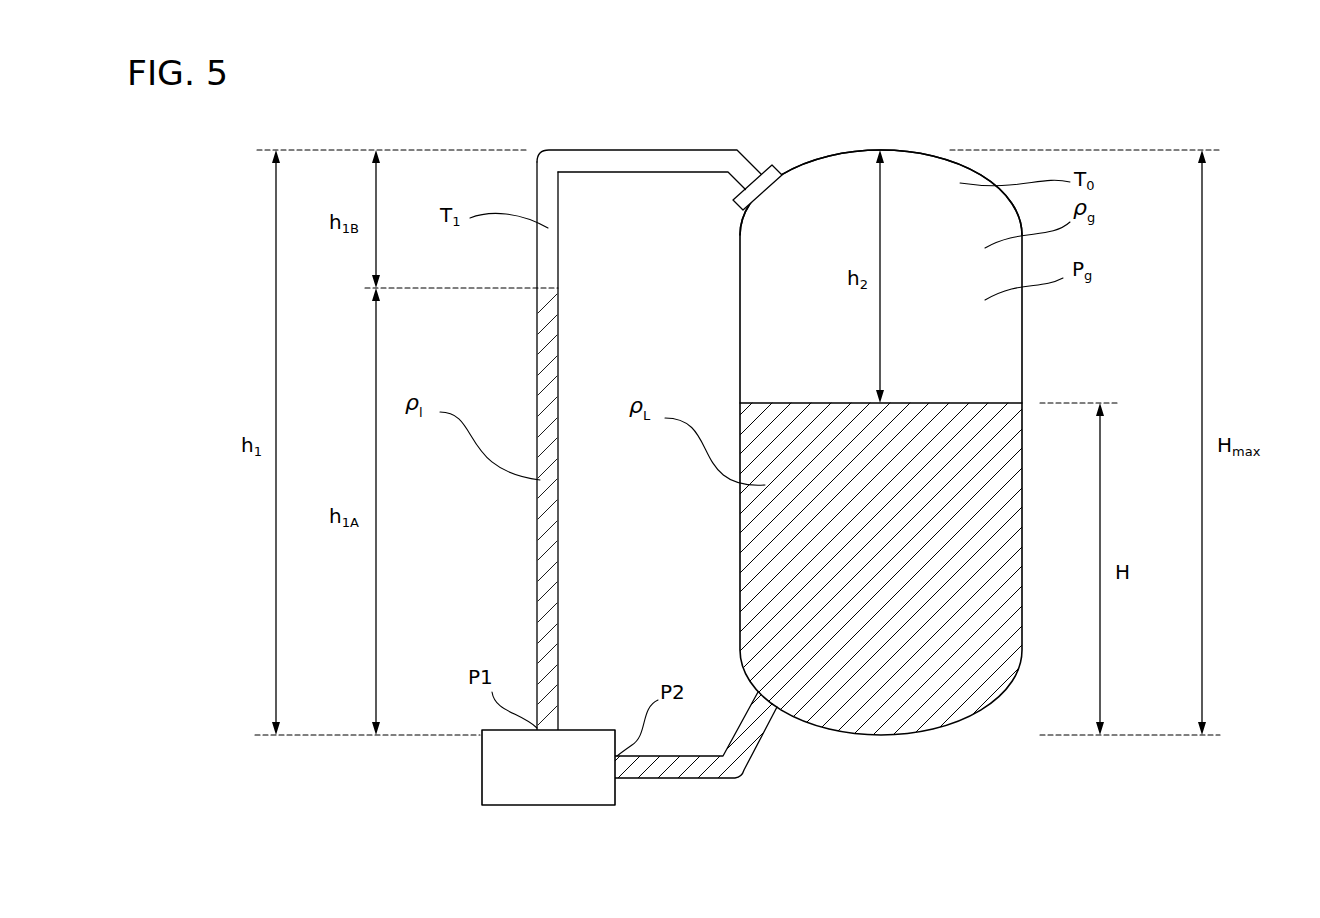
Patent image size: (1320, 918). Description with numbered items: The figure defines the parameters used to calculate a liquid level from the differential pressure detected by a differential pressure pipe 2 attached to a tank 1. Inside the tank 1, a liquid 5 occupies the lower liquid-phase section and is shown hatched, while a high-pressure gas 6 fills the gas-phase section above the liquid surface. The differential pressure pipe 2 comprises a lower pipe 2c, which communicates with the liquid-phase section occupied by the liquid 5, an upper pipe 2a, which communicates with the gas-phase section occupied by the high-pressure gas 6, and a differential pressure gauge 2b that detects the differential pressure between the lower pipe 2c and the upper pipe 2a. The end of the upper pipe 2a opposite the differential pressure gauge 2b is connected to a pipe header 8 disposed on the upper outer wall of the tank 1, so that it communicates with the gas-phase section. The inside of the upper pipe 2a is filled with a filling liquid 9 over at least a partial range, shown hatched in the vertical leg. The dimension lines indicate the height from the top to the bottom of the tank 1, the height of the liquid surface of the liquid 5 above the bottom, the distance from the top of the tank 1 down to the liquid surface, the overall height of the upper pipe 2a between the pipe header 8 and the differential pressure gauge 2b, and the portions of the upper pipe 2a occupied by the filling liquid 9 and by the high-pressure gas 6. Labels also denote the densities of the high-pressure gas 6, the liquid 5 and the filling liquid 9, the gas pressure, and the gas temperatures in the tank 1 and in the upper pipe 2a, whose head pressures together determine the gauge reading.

The tank 1 is at (1025, 332).
The differential pressure pipe 2 is at (537, 572).
The upper pipe 2a is at (537, 503).
The differential pressure gauge 2b is at (520, 806).
The lower pipe 2c is at (690, 778).
The liquid 5 is at (927, 700).
The high-pressure gas 6 is at (835, 182).
The pipe header 8 is at (752, 205).
The filling liquid 9 is at (538, 398).